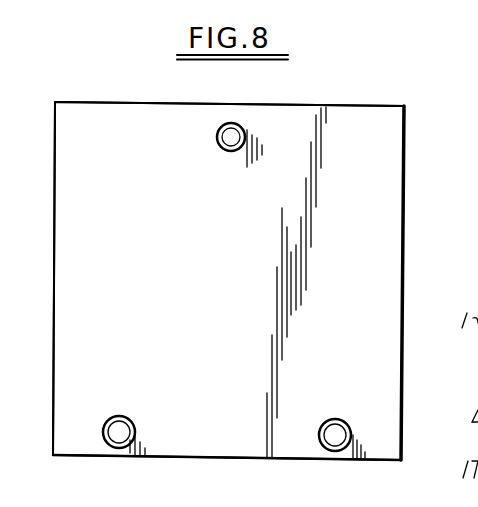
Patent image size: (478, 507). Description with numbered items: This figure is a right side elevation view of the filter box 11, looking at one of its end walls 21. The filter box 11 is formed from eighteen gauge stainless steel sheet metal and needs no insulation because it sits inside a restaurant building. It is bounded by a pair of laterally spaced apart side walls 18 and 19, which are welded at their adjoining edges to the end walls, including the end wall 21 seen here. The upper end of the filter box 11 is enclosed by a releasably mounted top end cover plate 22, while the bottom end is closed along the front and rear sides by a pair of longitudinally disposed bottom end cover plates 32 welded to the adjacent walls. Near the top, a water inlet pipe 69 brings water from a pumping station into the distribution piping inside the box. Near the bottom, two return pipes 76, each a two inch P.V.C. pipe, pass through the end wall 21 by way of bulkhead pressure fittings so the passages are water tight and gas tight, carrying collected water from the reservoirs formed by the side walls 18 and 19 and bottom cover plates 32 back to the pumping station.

The filter box 11 is at (406, 370).
The side wall 18 is at (53, 346).
The side wall 19 is at (403, 280).
The end wall 21 is at (67, 260).
The top end cover plate 22 is at (302, 105).
The bottom end cover plate 32 is at (212, 458).
The inlet pipe 69 is at (224, 149).
The return pipe 76 is at (121, 416).